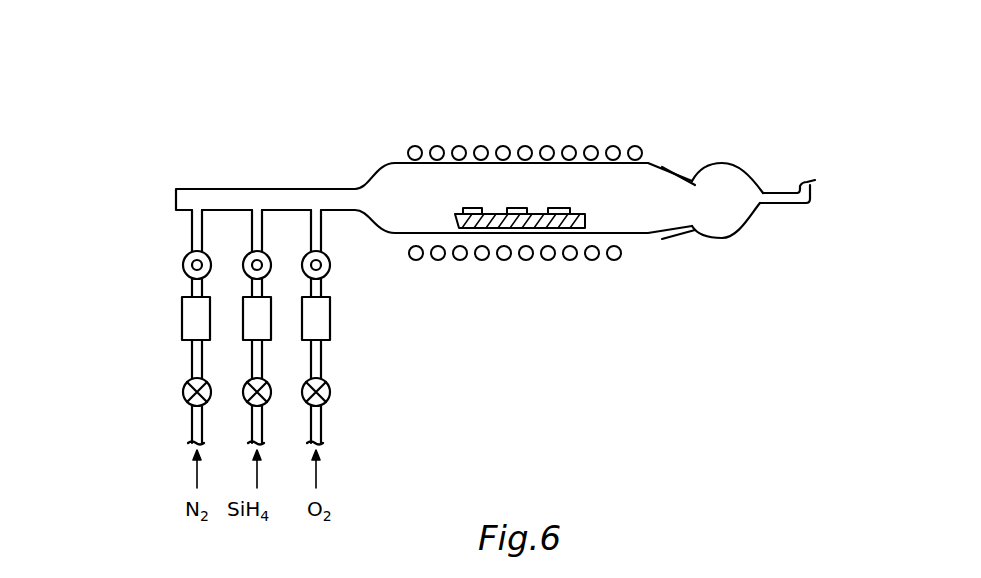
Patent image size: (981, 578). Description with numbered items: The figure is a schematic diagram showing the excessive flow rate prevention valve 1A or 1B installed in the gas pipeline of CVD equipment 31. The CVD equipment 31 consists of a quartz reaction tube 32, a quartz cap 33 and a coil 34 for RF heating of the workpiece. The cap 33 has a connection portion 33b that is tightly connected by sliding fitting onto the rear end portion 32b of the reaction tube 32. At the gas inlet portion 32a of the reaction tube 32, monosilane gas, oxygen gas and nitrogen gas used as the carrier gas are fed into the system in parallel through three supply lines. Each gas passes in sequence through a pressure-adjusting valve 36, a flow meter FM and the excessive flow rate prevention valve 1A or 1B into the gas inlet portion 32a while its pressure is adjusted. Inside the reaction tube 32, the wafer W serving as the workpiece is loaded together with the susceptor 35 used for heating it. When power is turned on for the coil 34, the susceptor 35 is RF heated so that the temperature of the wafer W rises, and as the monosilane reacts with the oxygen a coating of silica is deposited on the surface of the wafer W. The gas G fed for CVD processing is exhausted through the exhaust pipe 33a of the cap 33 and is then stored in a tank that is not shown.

The excessive flow rate prevention valve 1A is at (194, 252).
The excessive flow rate prevention valve 1B is at (312, 253).
The flow meter FM is at (303, 325).
The pressure-adjusting valve 36 is at (304, 395).
The CVD equipment 31 is at (519, 184).
The quartz reaction tube 32 is at (637, 240).
The gas inlet portion 32a is at (280, 191).
The rear end portion 32b is at (684, 234).
The quartz cap 33 is at (755, 213).
The exhaust pipe 33a is at (779, 194).
The connection portion 33b is at (672, 165).
The coil 34 is at (569, 146).
The susceptor 35 is at (493, 230).
The wafer W is at (466, 208).
The gas G is at (808, 172).